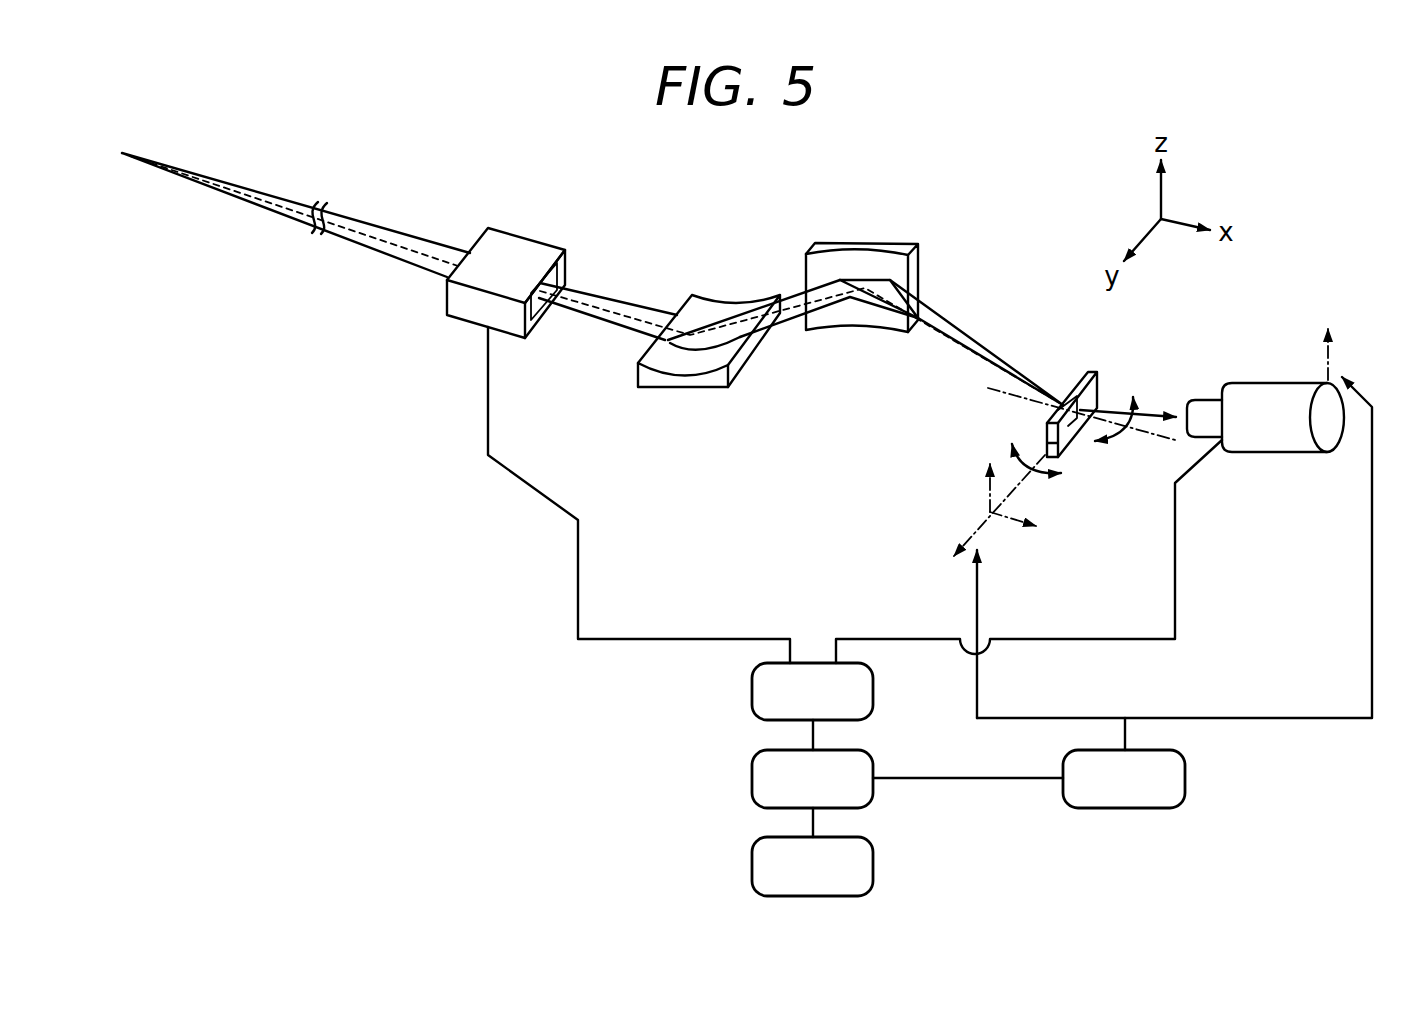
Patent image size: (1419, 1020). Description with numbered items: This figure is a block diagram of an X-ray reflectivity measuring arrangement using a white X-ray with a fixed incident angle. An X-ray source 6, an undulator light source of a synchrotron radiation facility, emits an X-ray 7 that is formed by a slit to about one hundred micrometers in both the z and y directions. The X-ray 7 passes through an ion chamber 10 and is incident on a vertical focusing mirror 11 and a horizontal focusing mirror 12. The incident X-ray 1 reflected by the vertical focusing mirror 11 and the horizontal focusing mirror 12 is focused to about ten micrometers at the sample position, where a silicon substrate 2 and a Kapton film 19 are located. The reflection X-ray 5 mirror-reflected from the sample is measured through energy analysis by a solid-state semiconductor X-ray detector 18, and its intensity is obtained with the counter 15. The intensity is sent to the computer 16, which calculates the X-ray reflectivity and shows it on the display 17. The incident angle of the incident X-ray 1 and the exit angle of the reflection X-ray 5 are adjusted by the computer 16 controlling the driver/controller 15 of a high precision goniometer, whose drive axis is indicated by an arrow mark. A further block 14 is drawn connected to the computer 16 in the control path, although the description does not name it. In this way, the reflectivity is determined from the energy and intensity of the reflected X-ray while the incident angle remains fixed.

The incident X-ray 1 is at (982, 343).
The silicon substrate 2 is at (1102, 392).
The reflection X-ray 5 is at (1152, 410).
The X-ray source 6 is at (122, 150).
The X-ray 7 is at (280, 213).
The ion chamber 10 is at (520, 231).
The vertical focusing mirror 11 is at (725, 293).
The horizontal focusing mirror 12 is at (880, 243).
The control unit 14 is at (752, 688).
The counter 15 is at (1185, 778).
The computer 16 is at (752, 773).
The display 17 is at (752, 859).
The solid-state semiconductor X-ray detector 18 is at (1273, 443).
The Kapton film 19 is at (1062, 400).